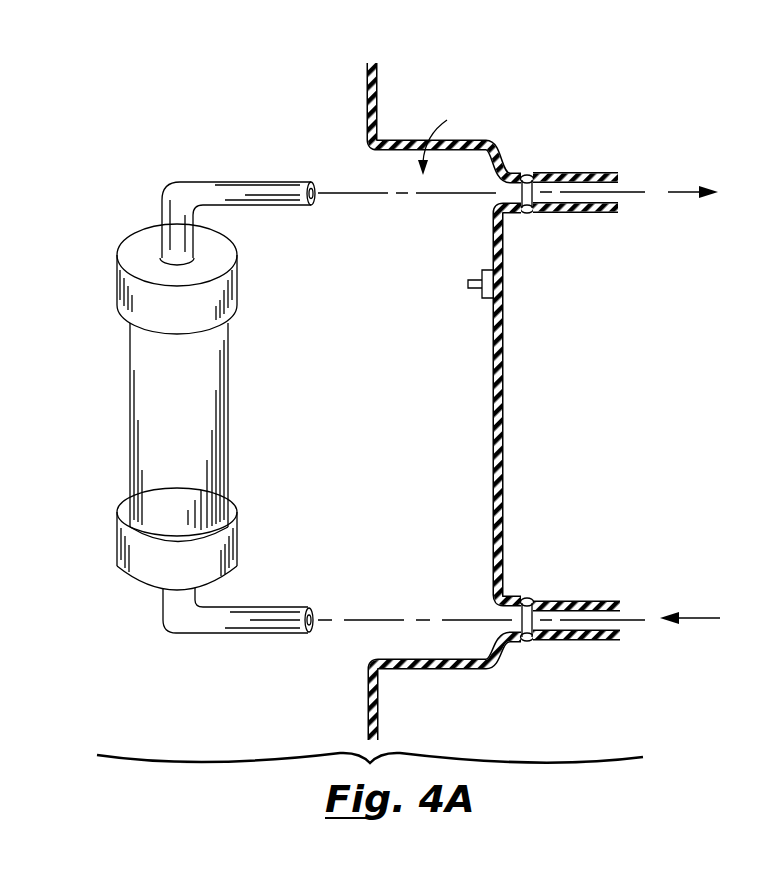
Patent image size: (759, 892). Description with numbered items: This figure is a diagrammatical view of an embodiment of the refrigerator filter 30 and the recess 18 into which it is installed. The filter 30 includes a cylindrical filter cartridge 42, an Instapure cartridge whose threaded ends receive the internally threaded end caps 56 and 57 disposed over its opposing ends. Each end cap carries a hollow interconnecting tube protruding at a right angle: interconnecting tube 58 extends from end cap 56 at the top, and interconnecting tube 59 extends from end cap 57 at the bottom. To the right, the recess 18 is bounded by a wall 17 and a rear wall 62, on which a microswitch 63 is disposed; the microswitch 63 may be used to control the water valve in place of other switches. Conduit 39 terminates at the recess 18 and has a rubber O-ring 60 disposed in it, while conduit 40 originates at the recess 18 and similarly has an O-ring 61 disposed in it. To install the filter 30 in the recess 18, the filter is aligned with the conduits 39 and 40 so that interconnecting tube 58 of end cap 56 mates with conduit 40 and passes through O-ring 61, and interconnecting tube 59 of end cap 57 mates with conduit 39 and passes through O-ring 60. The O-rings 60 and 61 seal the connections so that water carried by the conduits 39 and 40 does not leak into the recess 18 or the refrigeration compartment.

The refrigerator filter 30 is at (161, 141).
The interconnecting tube 58 is at (253, 182).
The end cap 56 is at (117, 276).
The filter cartridge 42 is at (130, 388).
The end cap 57 is at (117, 532).
The interconnecting tube 59 is at (192, 628).
The refrigerator cabinet wall 17 is at (368, 85).
The recess 18 is at (447, 142).
The conduit 40 is at (580, 183).
The O-ring 61 is at (525, 212).
The rear wall 62 is at (493, 436).
The microswitch 63 is at (485, 298).
The O-ring 60 is at (523, 600).
The conduit 39 is at (586, 626).